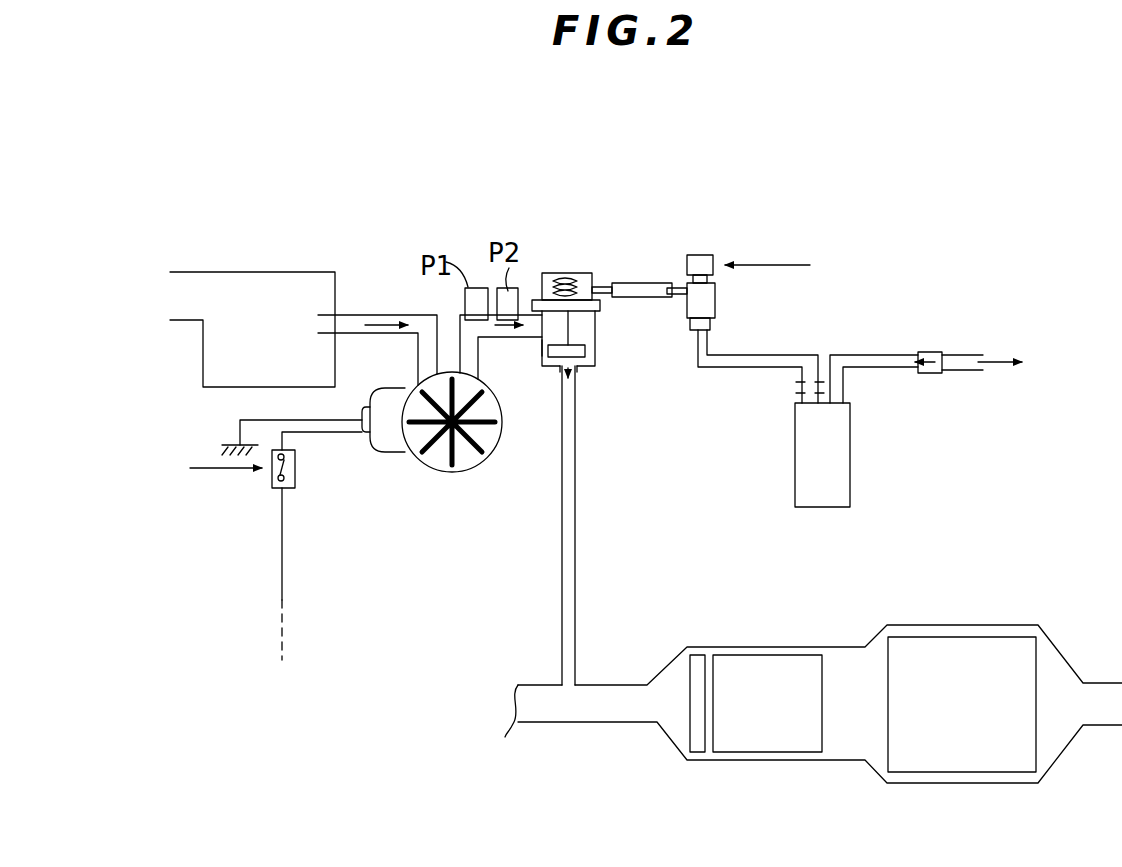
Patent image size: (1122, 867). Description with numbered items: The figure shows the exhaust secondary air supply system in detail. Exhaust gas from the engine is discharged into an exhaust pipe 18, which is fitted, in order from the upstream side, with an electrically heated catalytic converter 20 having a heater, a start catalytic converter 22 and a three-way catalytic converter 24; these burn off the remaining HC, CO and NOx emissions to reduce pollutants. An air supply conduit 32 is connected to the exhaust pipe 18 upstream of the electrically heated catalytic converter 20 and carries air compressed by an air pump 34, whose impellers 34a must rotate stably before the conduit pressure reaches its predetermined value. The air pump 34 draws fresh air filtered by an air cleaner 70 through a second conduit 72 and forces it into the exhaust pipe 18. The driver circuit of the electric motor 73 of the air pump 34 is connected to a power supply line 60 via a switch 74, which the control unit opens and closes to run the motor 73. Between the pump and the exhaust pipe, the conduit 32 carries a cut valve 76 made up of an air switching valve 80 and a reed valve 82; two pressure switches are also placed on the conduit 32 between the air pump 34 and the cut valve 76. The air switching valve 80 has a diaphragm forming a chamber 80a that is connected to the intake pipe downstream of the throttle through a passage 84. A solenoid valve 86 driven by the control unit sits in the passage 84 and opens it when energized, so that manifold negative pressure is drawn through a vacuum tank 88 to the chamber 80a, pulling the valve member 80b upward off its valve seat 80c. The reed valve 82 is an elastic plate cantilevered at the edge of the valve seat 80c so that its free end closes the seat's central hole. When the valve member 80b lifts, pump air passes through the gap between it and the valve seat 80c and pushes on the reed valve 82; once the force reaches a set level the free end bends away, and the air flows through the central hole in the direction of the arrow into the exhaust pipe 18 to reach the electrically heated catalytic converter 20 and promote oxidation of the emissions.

The exhaust pipe 18 is at (530, 683).
The electrically heated catalytic converter 20 is at (700, 663).
The start catalytic converter 22 is at (755, 660).
The three-way catalytic converter 24 is at (965, 650).
The air supply conduit 32 is at (460, 327).
The air pump 34 is at (470, 475).
The impellers 34a is at (482, 438).
The power supply line 60 is at (285, 565).
The air cleaner 70 is at (320, 270).
The second conduit 72 is at (348, 313).
The electric motor 73 is at (385, 458).
The switch 74 is at (270, 488).
The cut valve 76 is at (533, 354).
The air switching valve 80 is at (592, 297).
The chamber 80a is at (586, 275).
The valve member 80b is at (583, 340).
The valve seat 80c is at (585, 356).
The reed valve 82 is at (556, 364).
The passage 84 is at (653, 300).
The solenoid valve 86 is at (680, 255).
The vacuum tank 88 is at (852, 472).